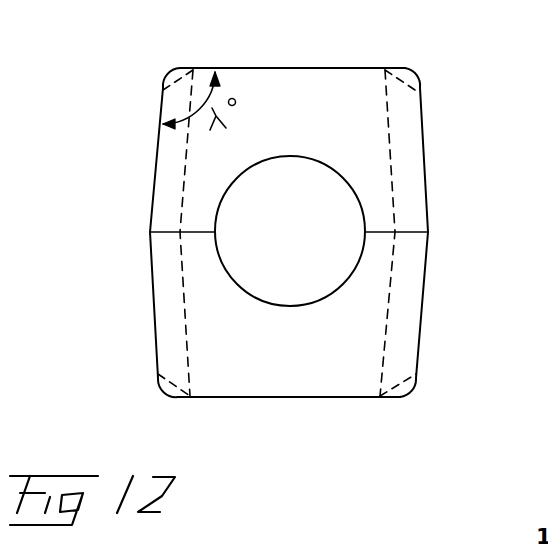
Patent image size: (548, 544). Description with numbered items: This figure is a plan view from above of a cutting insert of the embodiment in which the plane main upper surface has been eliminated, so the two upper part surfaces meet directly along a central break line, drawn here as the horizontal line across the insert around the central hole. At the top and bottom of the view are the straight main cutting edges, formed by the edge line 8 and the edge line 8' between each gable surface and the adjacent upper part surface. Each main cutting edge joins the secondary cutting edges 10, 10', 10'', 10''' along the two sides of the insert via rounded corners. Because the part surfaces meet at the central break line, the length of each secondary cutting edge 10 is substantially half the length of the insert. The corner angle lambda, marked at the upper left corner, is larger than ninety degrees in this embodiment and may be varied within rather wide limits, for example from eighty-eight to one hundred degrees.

The edge line 8 is at (292, 44).
The edge line 8' is at (289, 429).
The secondary cutting edge 10 is at (137, 150).
The secondary cutting edge 10' is at (445, 150).
The secondary cutting edge 10'' is at (446, 314).
The secondary cutting edge 10''' is at (136, 314).